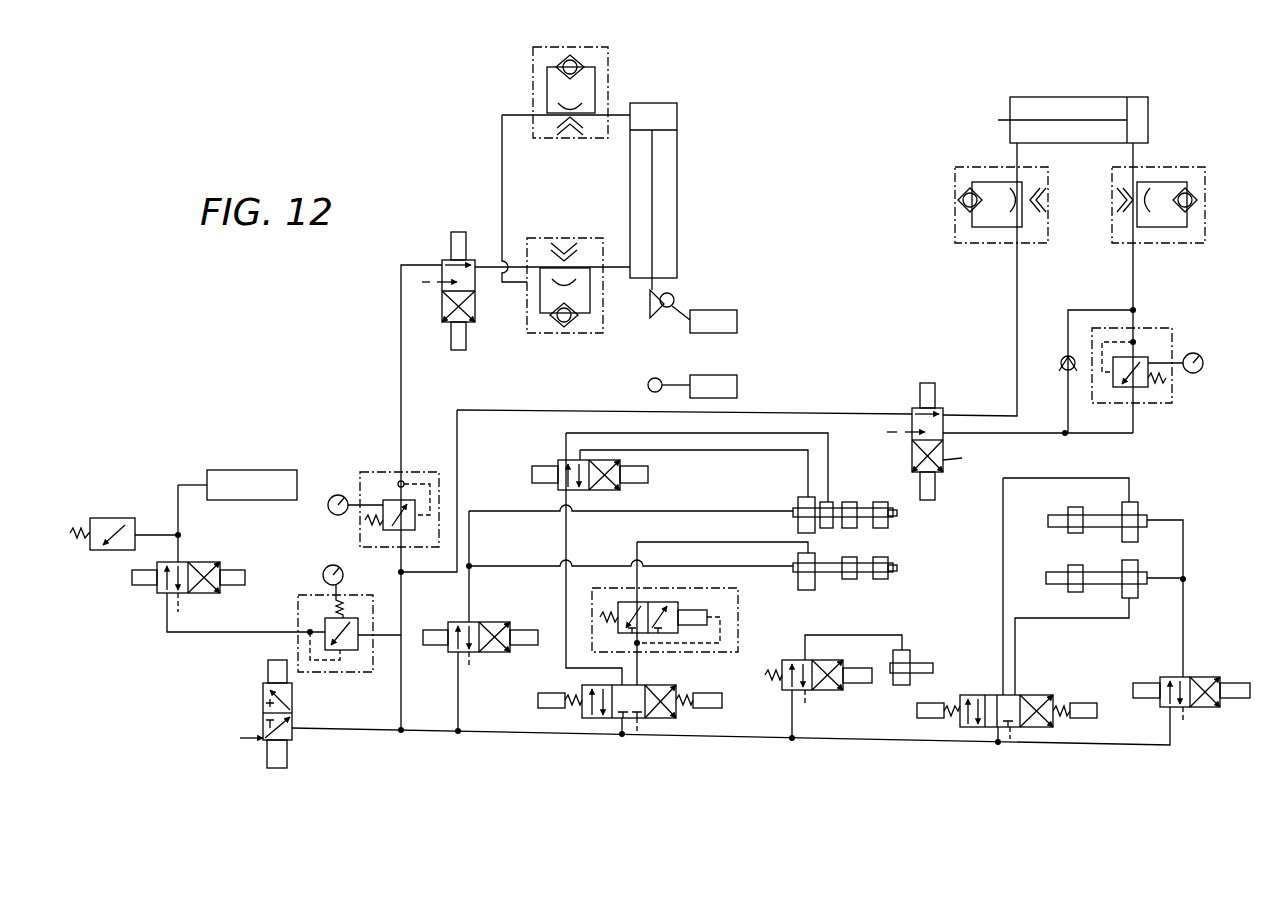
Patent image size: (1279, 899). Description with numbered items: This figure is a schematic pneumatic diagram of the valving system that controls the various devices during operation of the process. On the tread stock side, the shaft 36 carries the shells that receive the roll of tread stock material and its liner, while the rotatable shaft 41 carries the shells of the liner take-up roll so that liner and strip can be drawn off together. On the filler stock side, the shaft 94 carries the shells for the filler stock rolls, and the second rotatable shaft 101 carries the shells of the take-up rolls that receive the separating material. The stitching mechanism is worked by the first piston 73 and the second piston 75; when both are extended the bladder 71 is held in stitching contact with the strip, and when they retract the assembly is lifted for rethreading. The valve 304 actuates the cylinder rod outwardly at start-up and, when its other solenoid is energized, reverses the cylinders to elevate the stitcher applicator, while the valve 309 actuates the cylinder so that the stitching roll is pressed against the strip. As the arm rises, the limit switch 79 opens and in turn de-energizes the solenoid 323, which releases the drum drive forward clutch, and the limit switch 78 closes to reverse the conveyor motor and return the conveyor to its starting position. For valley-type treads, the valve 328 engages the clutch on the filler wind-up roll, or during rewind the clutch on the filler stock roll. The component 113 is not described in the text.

The shaft 36 is at (897, 515).
The rotatable shaft 41 is at (897, 571).
The bladder 71 is at (258, 462).
The first piston 73 is at (1148, 130).
The second piston 75 is at (670, 200).
The limit switch 78 is at (737, 323).
The limit switch 79 is at (737, 389).
The shaft 94 is at (1058, 513).
The second rotatable shaft 101 is at (1058, 574).
The directional control valve 113 is at (656, 720).
The valve 304 is at (476, 314).
The valve 309 is at (945, 456).
The solenoid 323 is at (832, 691).
The valve 328 is at (1029, 695).